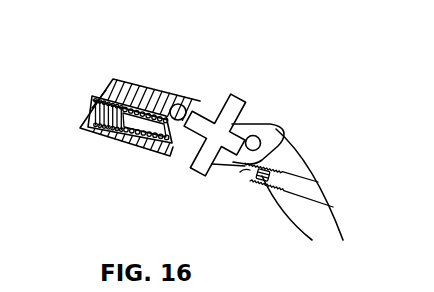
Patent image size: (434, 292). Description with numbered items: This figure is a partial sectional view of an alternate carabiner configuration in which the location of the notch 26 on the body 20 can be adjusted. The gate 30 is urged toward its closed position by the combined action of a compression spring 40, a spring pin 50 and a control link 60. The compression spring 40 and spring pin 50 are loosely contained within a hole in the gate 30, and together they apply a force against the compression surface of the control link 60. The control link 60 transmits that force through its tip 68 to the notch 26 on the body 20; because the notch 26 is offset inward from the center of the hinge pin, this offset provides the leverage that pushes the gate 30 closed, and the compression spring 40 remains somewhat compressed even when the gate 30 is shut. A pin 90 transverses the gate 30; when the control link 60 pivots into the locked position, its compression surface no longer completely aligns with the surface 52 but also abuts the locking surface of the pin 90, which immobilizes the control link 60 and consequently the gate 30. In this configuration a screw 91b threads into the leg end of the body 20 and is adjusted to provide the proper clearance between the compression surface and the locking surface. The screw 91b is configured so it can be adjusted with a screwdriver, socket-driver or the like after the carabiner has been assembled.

The body 20 is at (293, 150).
The notch 26 is at (280, 130).
The gate 30 is at (103, 140).
The compression spring 40 is at (128, 125).
The spring pin 50 is at (135, 137).
The surface 52 is at (152, 143).
The control link 60 is at (210, 166).
The tip 68 is at (232, 170).
The pin 90 is at (176, 105).
The screw 91b is at (240, 180).